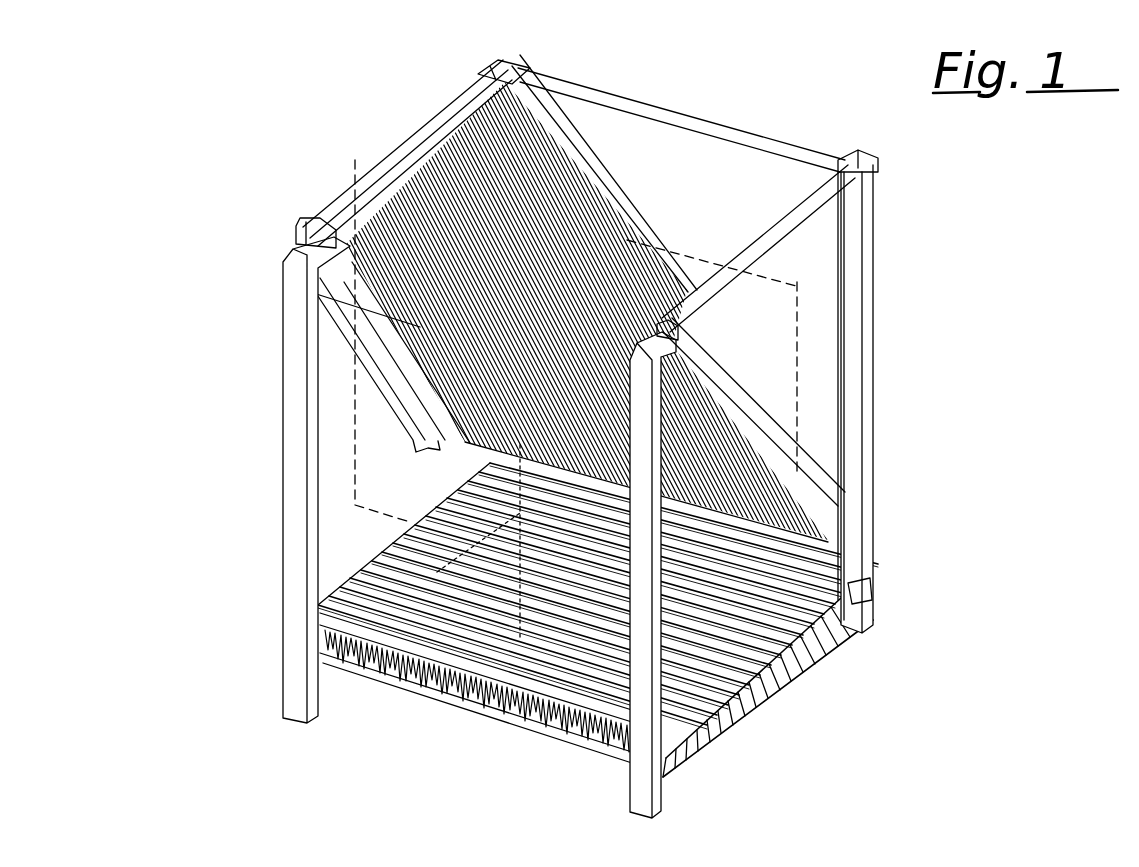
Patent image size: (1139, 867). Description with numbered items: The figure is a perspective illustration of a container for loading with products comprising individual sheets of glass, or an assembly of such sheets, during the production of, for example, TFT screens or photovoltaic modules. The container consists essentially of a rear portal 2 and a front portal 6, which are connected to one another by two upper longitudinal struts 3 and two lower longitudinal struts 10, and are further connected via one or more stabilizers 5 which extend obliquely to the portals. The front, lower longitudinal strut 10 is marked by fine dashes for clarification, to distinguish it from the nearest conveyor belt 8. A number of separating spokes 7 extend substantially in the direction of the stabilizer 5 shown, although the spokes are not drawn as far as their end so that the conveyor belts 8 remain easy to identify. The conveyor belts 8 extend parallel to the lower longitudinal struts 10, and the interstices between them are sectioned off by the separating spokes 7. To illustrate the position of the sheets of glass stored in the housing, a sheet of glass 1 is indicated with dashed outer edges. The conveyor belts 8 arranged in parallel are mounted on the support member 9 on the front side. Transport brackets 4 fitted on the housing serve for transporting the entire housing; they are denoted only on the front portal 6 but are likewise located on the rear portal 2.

The sheet of glass 1 is at (353, 455).
The rear portal 2 is at (430, 130).
The upper longitudinal struts 3 is at (657, 113).
The transport brackets 4 is at (678, 322).
The stabilizer 5 is at (758, 357).
The front portal 6 is at (858, 398).
The separating spokes 7 is at (752, 462).
The conveyor belts 8 is at (866, 600).
The support member 9 is at (793, 643).
The lower longitudinal struts 10 is at (418, 672).